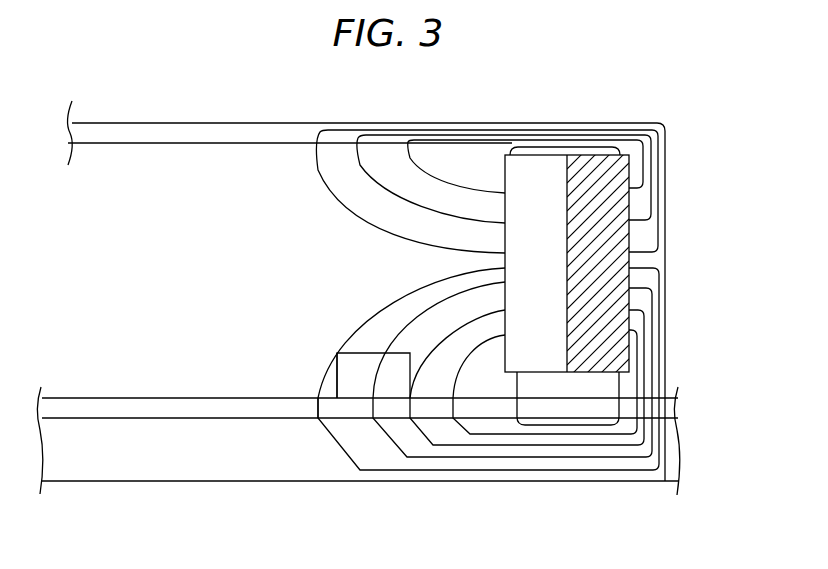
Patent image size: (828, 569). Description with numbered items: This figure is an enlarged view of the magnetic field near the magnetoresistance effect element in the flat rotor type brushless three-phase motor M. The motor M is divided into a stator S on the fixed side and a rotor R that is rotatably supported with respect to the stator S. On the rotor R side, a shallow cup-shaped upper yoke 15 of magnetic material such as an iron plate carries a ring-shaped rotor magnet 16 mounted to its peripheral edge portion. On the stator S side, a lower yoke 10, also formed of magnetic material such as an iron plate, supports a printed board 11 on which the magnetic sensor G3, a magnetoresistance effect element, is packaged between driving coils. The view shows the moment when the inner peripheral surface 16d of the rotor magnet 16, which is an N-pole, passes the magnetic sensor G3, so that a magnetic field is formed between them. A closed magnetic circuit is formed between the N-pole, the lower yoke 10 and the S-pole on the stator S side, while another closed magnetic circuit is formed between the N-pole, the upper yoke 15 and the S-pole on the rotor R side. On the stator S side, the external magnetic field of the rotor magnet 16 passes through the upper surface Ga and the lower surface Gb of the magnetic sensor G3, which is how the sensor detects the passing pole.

The upper yoke 15 is at (164, 131).
The rotor magnet 16 is at (543, 172).
The inner peripheral surface 16d is at (505, 172).
The printed board 11 is at (162, 405).
The lower yoke 10 is at (160, 474).
The magnetic sensor G3 is at (371, 368).
The upper surface Ga is at (355, 353).
The lower surface Gb is at (353, 402).
The rotor R is at (697, 133).
The three-phase motor M is at (710, 263).
The stator S is at (697, 423).